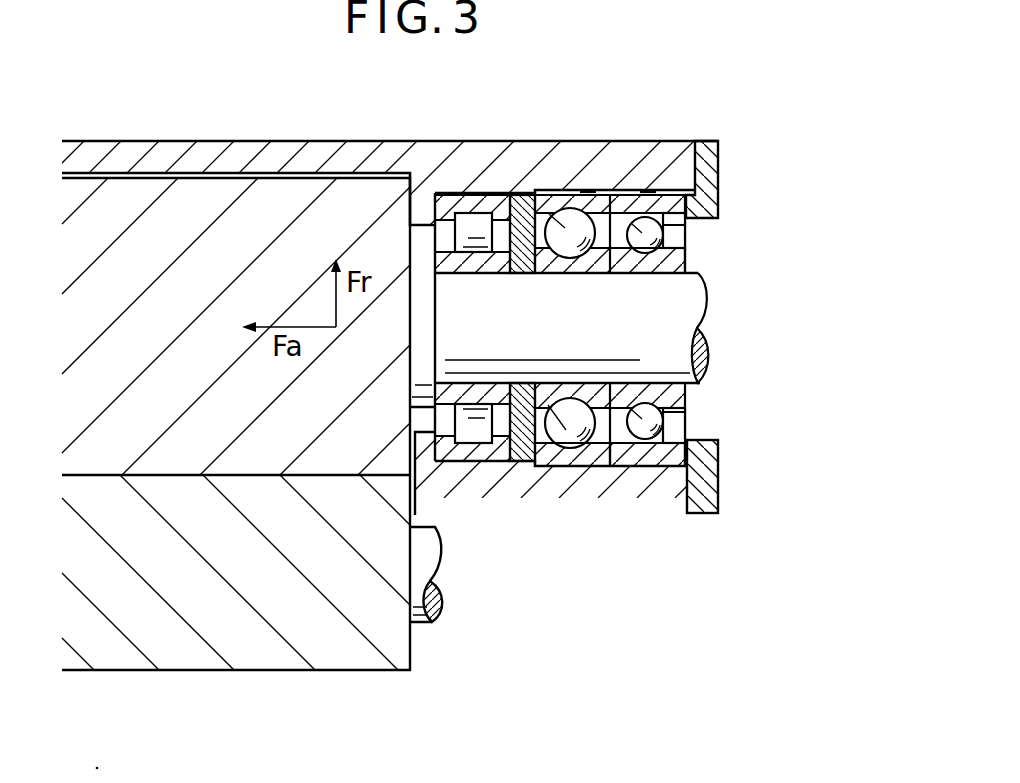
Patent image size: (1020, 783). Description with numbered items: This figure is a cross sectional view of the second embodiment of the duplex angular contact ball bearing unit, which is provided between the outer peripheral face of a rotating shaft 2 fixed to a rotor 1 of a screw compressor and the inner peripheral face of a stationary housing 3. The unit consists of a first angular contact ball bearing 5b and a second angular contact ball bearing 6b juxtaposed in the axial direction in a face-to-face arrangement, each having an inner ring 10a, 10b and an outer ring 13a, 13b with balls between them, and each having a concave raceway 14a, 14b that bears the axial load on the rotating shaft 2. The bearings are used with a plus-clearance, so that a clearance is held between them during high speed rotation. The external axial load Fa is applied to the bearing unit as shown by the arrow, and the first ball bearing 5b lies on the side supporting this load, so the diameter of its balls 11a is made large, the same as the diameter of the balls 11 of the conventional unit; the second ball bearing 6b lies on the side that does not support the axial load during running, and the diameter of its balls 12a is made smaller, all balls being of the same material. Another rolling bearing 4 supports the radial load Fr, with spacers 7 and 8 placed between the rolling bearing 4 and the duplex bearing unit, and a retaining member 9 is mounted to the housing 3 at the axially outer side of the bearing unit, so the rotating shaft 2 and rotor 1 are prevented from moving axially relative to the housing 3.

The rotor 1 is at (127, 193).
The rotating shaft 2 is at (700, 310).
The housing 3 is at (193, 153).
The rolling bearing 4 is at (440, 193).
The spacer 7 is at (492, 200).
The spacer 8 is at (517, 194).
The retaining member 9 is at (718, 182).
The first angular contact ball bearing 5b is at (615, 212).
The second angular contact ball bearing 6b is at (667, 190).
The inner ring 10a is at (527, 470).
The inner ring 10b is at (685, 257).
The balls 11 is at (587, 468).
The balls 11a is at (563, 205).
The balls 12a is at (685, 237).
The outer ring 13a is at (588, 184).
The outer ring 13b is at (648, 184).
The raceway 14a is at (566, 466).
The raceway 14b is at (685, 432).